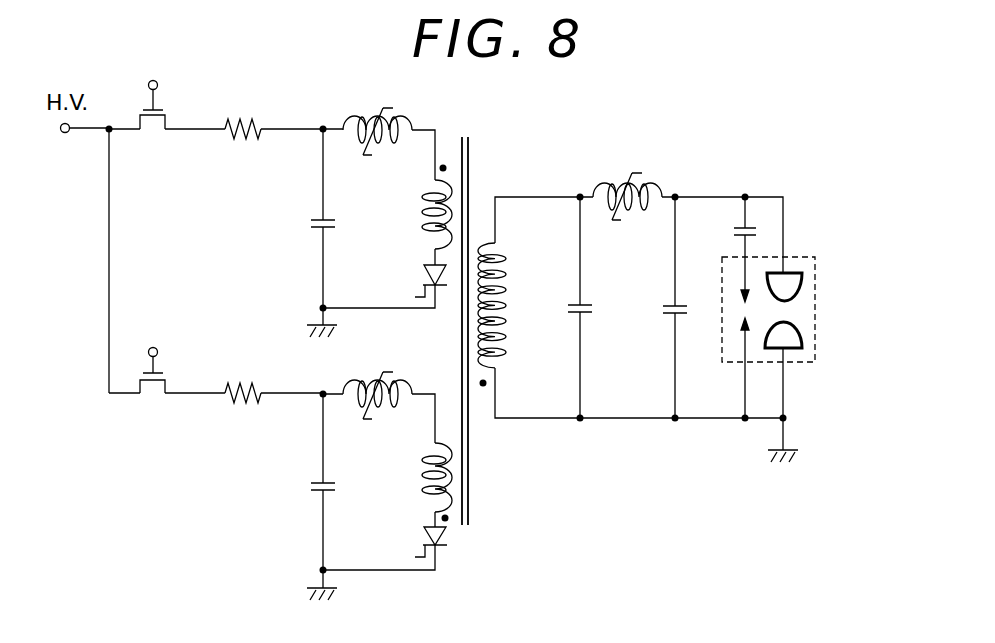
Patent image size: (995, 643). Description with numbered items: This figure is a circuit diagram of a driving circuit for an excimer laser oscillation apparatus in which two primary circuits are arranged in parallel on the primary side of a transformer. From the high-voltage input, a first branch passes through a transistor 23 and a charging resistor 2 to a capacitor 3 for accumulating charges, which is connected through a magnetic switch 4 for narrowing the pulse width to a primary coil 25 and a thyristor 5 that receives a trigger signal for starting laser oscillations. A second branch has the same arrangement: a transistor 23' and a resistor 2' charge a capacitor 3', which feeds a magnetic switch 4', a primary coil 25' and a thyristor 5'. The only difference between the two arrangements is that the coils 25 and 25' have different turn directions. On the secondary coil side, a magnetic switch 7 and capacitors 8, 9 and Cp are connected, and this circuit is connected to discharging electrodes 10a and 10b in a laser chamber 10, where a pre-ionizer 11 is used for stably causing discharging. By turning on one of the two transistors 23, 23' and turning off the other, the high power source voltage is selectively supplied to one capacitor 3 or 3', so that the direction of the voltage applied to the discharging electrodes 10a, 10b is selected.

The transistor 23 is at (161, 83).
The charging resistor 2 is at (243, 110).
The capacitor 3 is at (337, 208).
The magnetic switch 4 is at (377, 112).
The primary coil 25 is at (409, 214).
The thyristor 5 is at (416, 281).
The transistor 23' is at (164, 348).
The resistor 2' is at (243, 374).
The capacitor 3' is at (340, 472).
The magnetic switch 4' is at (377, 377).
The primary coil 25' is at (412, 477).
The thyristor 5' is at (415, 543).
The magnetic switch 7 is at (622, 175).
The capacitor 8 is at (588, 305).
The capacitor 9 is at (734, 232).
The laser chamber 10 is at (803, 263).
The discharging electrode 10a is at (805, 292).
The discharging electrode 10b is at (805, 336).
The pre-ionizer 11 is at (737, 310).
The capacitor Cp is at (657, 307).